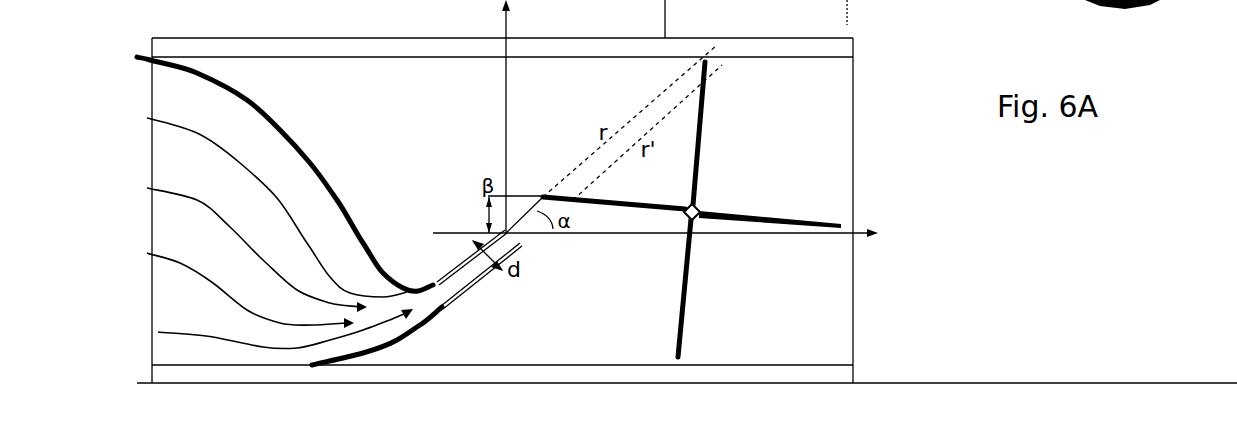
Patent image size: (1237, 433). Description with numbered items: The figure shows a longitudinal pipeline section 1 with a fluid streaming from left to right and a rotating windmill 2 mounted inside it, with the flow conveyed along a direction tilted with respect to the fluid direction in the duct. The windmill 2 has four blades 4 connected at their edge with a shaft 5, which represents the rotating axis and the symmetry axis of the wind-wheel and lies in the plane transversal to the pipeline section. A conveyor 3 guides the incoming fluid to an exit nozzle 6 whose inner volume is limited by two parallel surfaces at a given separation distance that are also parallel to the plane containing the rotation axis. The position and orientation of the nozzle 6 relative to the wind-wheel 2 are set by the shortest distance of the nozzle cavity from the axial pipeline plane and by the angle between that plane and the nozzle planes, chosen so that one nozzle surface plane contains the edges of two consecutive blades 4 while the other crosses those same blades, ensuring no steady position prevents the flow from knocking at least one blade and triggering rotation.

The longitudinal pipeline section 1 is at (502, 195).
The rotating windmill 2 is at (502, 254).
The conveyor 3 is at (285, 174).
The blades 4 is at (692, 209).
The shaft 5 is at (700, 200).
The exit nozzle 6 is at (417, 297).